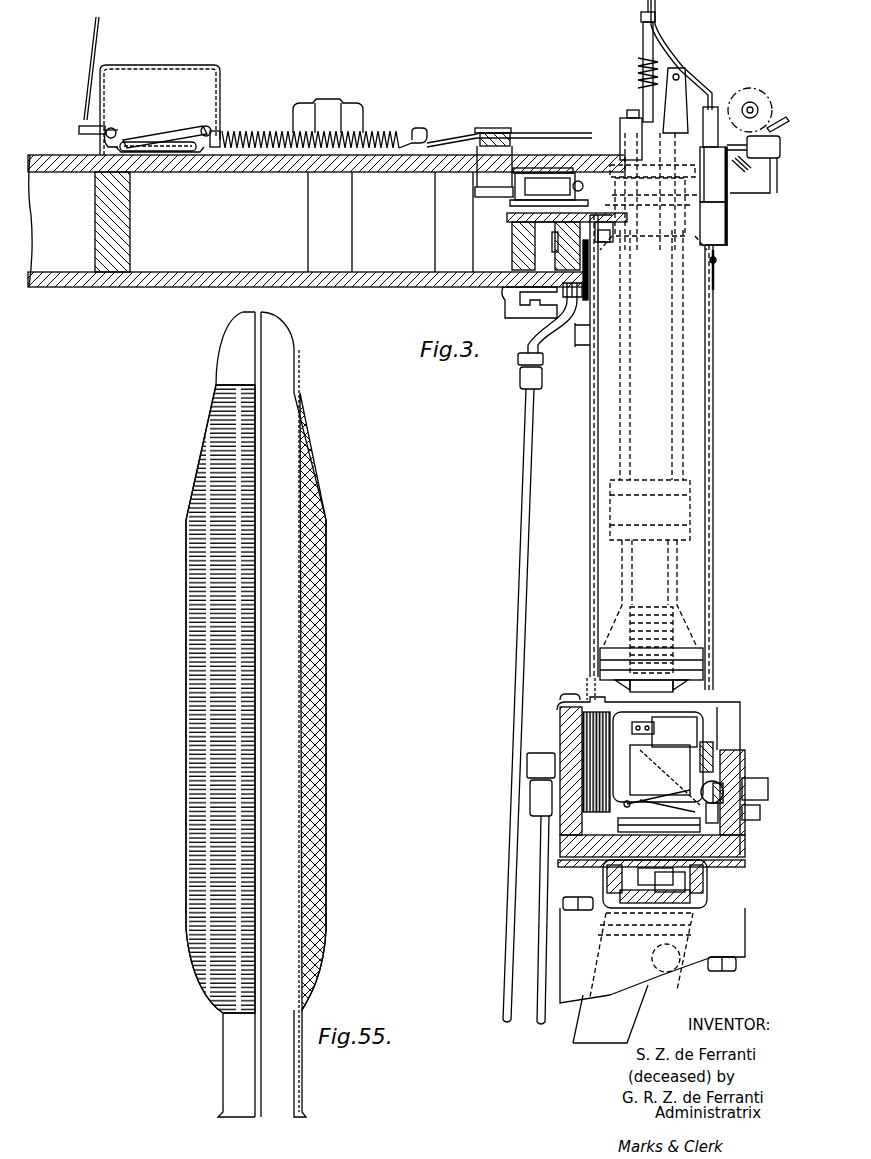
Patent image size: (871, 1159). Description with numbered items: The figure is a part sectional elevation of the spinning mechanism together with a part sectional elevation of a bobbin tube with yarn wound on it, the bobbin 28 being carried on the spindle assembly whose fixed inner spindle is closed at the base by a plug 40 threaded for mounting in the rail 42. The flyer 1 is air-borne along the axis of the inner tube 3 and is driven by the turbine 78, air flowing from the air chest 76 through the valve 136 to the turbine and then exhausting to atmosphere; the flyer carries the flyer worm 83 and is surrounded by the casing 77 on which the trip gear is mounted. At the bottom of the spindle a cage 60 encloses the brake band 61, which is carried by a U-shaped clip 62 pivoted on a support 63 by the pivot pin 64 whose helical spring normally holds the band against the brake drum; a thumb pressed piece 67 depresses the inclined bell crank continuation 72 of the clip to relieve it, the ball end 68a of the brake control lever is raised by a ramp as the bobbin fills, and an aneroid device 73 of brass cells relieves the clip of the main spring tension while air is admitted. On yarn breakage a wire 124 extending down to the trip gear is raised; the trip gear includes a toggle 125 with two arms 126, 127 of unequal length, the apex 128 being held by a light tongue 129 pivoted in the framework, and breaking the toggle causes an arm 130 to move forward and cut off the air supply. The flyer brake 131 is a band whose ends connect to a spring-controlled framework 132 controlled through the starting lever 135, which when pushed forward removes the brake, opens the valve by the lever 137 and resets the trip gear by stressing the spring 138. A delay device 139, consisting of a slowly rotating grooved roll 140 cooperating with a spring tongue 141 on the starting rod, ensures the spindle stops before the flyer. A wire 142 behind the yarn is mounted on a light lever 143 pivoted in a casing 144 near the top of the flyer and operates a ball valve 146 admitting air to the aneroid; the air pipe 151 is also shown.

In FIG. 3, the flyer 1 is at (642, 32).
In FIG. 3, the inner tube 3 is at (718, 270).
In FIG. 3, the bobbin 28 is at (690, 297).
In FIG. 55, the bobbin 28 is at (298, 742).
In FIG. 3, the plug 40 is at (680, 880).
In FIG. 3, the rail 42 is at (612, 878).
In FIG. 3, the cage 60 is at (673, 725).
In FIG. 3, the brake band 61 is at (656, 730).
In FIG. 3, the clip 62 is at (627, 770).
In FIG. 3, the support 63 is at (622, 817).
In FIG. 3, the pivot pin 64 is at (627, 803).
In FIG. 3, the thumb pressed piece 67 is at (716, 810).
In FIG. 3, the ball end 68a is at (742, 816).
In FIG. 3, the bell crank continuation 72 is at (698, 803).
In FIG. 3, the aneroid device 73 is at (590, 740).
In FIG. 3, the air chest 76 is at (388, 258).
In FIG. 3, the casing 77 is at (692, 346).
In FIG. 3, the turbine 78 is at (728, 200).
In FIG. 3, the flyer worm 83 is at (640, 65).
In FIG. 3, the wire 124 is at (93, 48).
In FIG. 3, the toggle 125 is at (217, 133).
In FIG. 3, the arm 126 is at (180, 132).
In FIG. 3, the arm 127 is at (151, 142).
In FIG. 3, the apex 128 is at (121, 147).
In FIG. 3, the tongue 129 is at (113, 128).
In FIG. 3, the arm 130 is at (373, 143).
In FIG. 3, the flyer brake 131 is at (620, 126).
In FIG. 3, the spring-controlled framework 132 is at (670, 98).
In FIG. 3, the starting lever 135 is at (538, 133).
In FIG. 3, the valve 136 is at (555, 190).
In FIG. 3, the lever 137 is at (488, 187).
In FIG. 3, the spring 138 is at (284, 112).
In FIG. 3, the delay device 139 is at (765, 97).
In FIG. 3, the grooved roll 140 is at (742, 92).
In FIG. 3, the spring tongue 141 is at (770, 128).
In FIG. 3, the wire 142 is at (672, 30).
In FIG. 3, the light lever 143 is at (746, 165).
In FIG. 3, the casing 144 is at (728, 225).
In FIG. 3, the ball valve 146 is at (553, 241).
In FIG. 3, the pipe 151 is at (533, 1032).